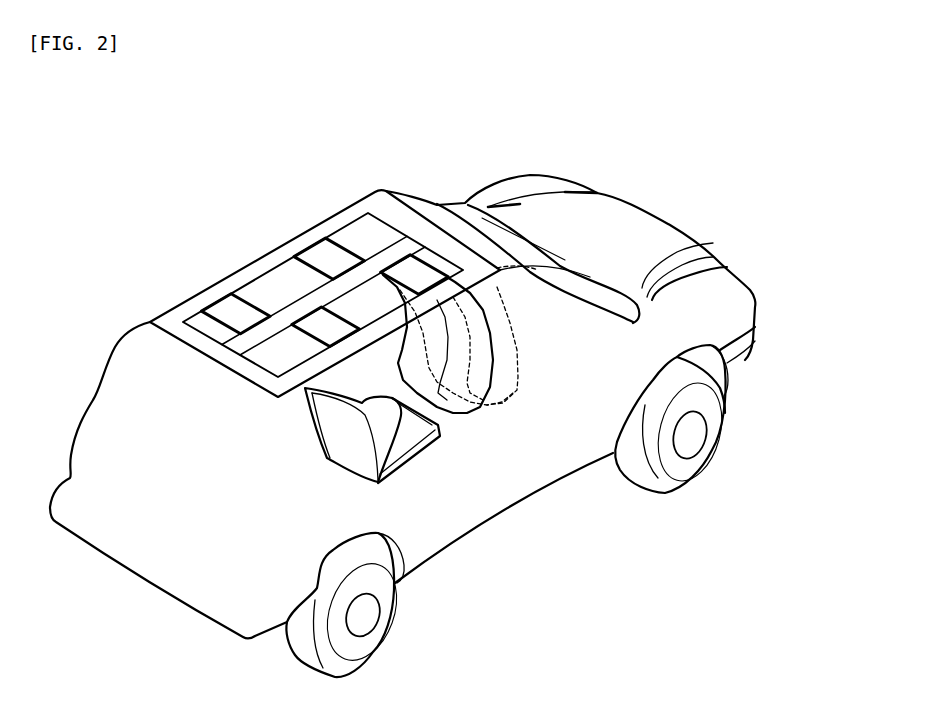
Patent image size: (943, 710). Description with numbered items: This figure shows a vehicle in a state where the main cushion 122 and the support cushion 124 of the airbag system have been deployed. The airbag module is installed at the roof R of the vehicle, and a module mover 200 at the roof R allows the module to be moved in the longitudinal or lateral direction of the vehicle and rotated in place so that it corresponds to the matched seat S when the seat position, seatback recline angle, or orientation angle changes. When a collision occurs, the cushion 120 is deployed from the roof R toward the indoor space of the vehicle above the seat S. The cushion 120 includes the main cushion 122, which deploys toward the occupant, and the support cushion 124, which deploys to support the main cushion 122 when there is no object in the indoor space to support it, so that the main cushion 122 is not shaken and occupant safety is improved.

The module mover 200 is at (160, 311).
The roof R is at (380, 186).
The seat S is at (419, 477).
The cushion 120 is at (758, 157).
The main cushion 122 is at (453, 352).
The support cushion 124 is at (503, 367).